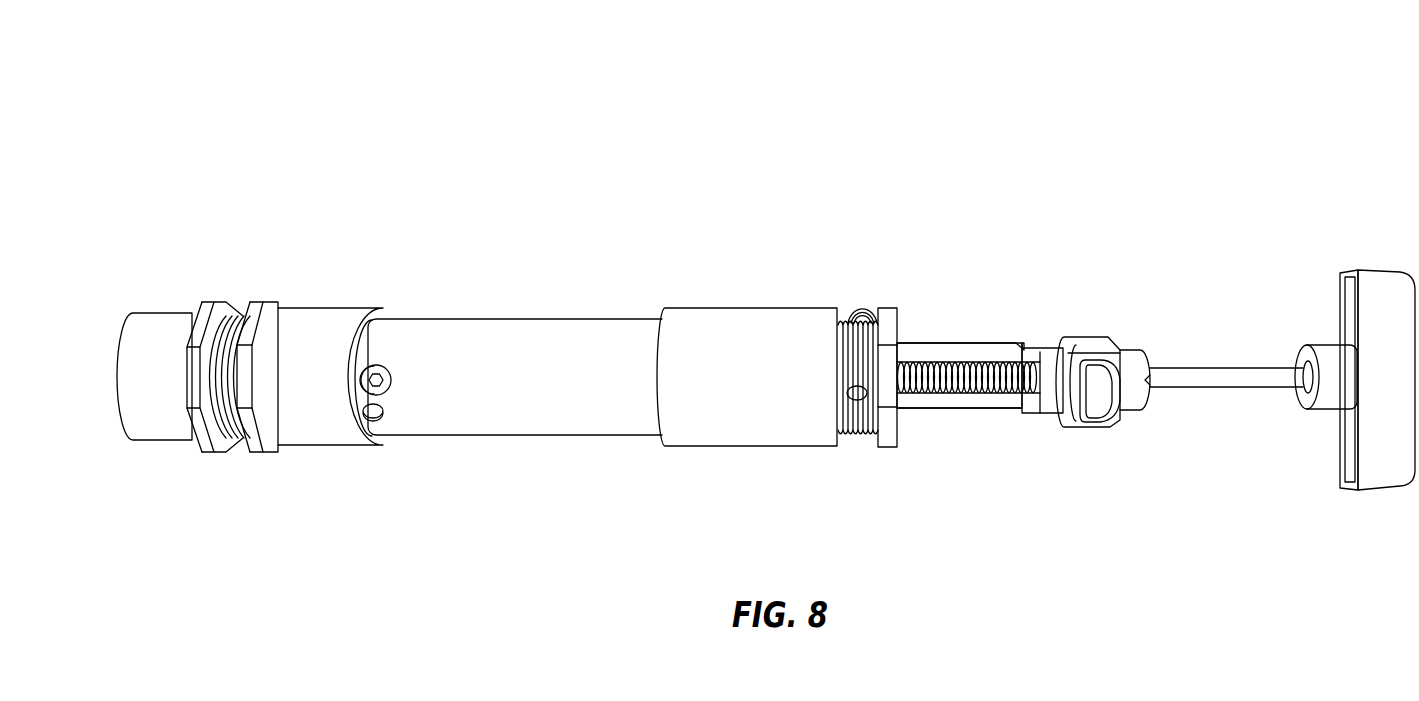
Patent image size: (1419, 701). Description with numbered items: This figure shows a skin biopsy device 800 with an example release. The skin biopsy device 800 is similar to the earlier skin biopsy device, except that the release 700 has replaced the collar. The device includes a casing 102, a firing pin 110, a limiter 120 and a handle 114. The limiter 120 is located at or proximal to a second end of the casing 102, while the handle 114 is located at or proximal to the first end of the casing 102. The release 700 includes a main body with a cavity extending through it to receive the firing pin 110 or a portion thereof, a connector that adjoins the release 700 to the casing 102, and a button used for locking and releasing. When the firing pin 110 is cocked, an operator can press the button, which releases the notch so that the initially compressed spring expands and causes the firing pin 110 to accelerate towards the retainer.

The skin biopsy device 800 is at (783, 148).
The limiter 120 is at (180, 270).
The casing 102 is at (388, 366).
The release 700 is at (1064, 303).
The firing pin 110 is at (1223, 325).
The handle 114 is at (1378, 467).